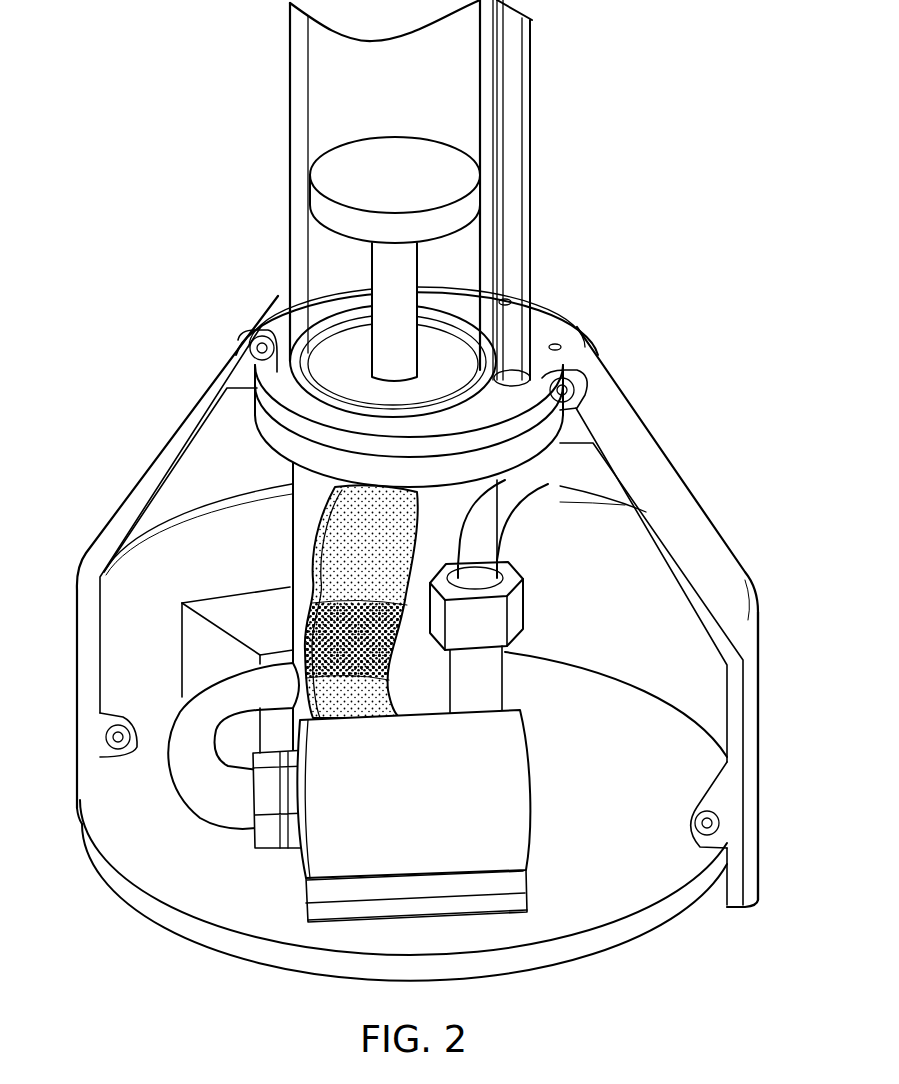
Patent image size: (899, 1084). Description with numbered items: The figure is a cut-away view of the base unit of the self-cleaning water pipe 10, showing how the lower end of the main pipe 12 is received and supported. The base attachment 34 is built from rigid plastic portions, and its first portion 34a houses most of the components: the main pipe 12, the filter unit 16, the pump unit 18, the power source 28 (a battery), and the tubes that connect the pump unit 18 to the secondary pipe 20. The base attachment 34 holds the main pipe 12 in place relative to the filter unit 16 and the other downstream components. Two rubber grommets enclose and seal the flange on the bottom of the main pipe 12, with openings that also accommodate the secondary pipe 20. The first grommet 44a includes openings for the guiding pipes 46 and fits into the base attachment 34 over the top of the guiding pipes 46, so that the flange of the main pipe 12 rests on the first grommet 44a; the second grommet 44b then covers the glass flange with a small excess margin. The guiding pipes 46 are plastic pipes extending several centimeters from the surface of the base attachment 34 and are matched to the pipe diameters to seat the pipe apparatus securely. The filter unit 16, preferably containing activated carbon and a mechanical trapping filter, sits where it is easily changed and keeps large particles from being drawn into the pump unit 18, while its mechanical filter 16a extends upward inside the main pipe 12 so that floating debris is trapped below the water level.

The self-cleaning water pipe 10 is at (210, 66).
The main pipe 12 is at (297, 119).
The filter unit 16 is at (322, 650).
The mechanical filter 16a is at (357, 152).
The pump unit 18 is at (487, 845).
The secondary pipe 20 is at (536, 80).
The power source 28 is at (200, 638).
The base attachment 34 is at (186, 296).
The first portion 34a is at (704, 521).
The first grommet 44a is at (563, 418).
The second grommet 44b is at (562, 455).
The guiding pipes 46 is at (505, 524).